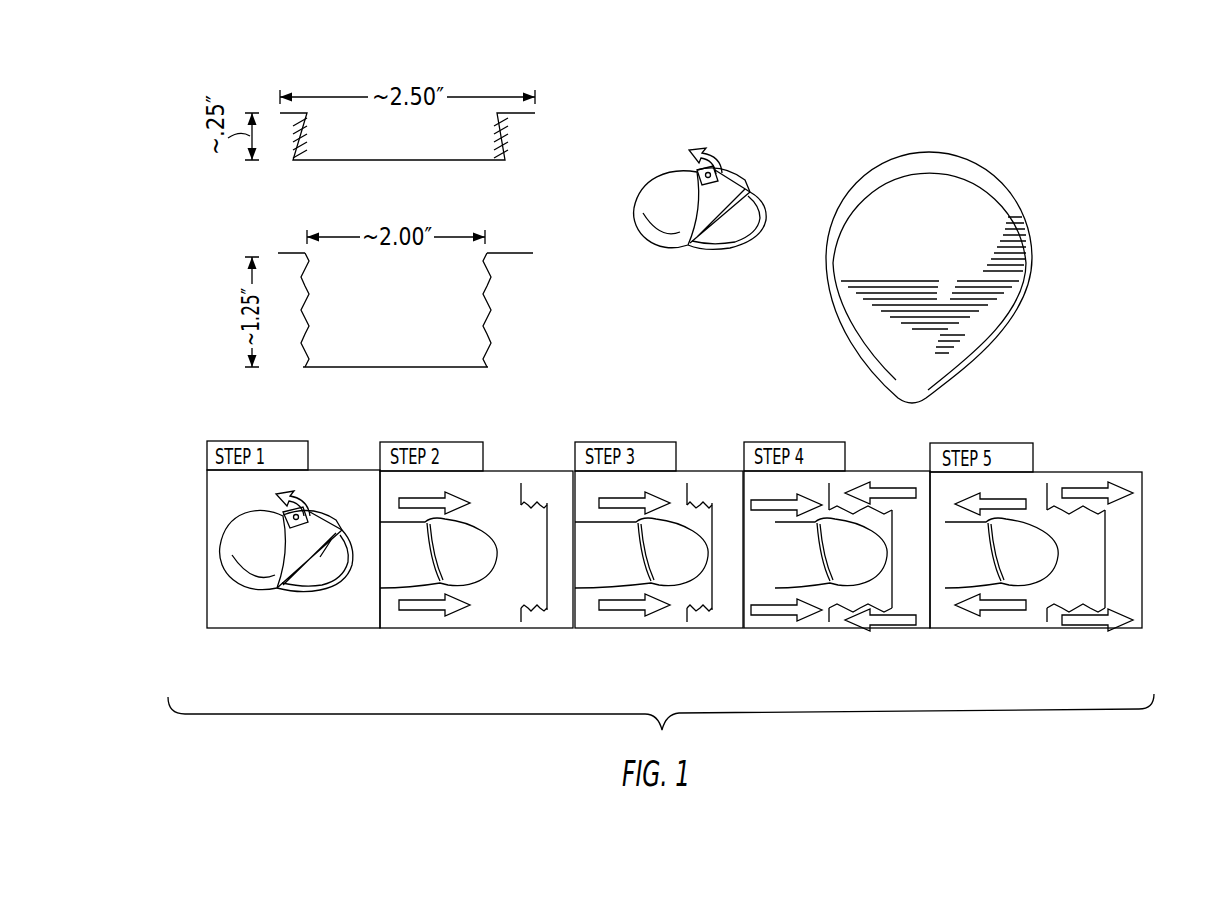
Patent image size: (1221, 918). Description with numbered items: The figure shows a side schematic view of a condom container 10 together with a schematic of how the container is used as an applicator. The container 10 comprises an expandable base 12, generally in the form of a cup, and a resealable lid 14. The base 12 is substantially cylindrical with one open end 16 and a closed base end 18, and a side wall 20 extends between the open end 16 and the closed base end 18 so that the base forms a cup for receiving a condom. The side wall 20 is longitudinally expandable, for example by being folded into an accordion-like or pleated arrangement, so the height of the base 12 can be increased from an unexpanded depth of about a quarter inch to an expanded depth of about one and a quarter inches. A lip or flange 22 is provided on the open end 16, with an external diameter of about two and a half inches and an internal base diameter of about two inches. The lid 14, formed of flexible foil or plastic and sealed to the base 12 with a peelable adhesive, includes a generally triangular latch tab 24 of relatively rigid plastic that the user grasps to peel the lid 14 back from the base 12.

The condom container 10 is at (1052, 176).
The expandable base 12 is at (504, 171).
The resealable lid 14 is at (667, 195).
The open end 16 is at (320, 557).
The closed base end 18 is at (435, 369).
The side wall 20 is at (490, 318).
The lip or flange 22 is at (518, 255).
The latch tab 24 is at (690, 170).